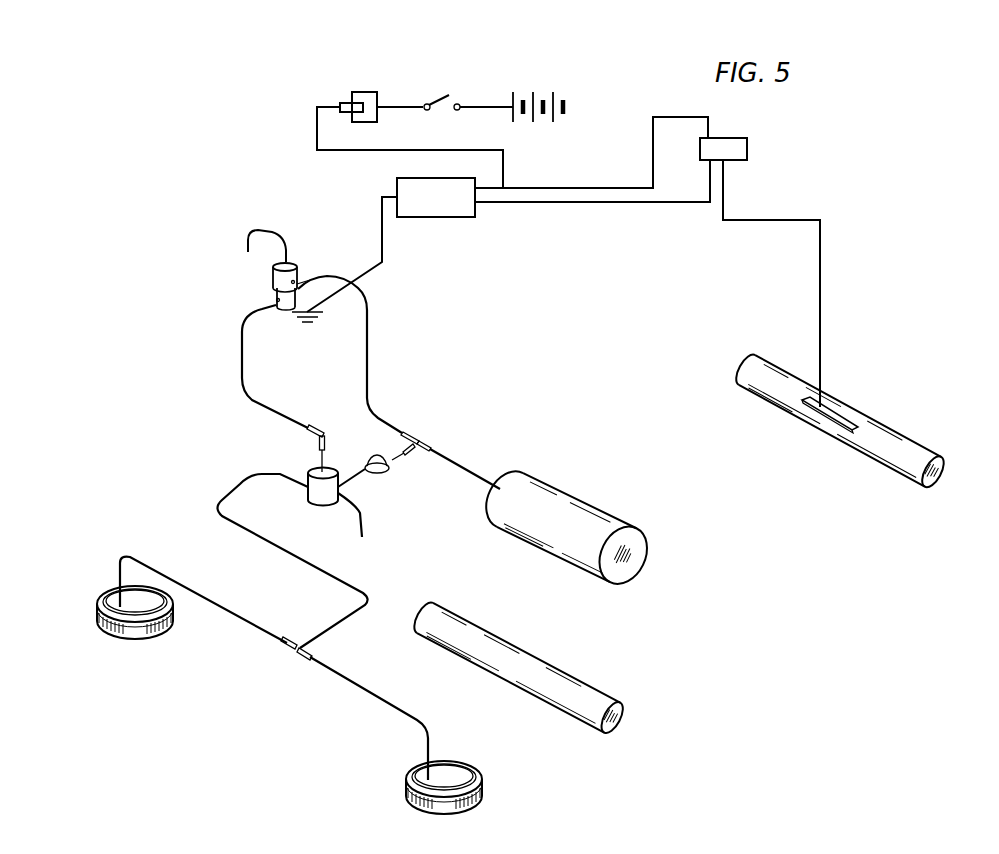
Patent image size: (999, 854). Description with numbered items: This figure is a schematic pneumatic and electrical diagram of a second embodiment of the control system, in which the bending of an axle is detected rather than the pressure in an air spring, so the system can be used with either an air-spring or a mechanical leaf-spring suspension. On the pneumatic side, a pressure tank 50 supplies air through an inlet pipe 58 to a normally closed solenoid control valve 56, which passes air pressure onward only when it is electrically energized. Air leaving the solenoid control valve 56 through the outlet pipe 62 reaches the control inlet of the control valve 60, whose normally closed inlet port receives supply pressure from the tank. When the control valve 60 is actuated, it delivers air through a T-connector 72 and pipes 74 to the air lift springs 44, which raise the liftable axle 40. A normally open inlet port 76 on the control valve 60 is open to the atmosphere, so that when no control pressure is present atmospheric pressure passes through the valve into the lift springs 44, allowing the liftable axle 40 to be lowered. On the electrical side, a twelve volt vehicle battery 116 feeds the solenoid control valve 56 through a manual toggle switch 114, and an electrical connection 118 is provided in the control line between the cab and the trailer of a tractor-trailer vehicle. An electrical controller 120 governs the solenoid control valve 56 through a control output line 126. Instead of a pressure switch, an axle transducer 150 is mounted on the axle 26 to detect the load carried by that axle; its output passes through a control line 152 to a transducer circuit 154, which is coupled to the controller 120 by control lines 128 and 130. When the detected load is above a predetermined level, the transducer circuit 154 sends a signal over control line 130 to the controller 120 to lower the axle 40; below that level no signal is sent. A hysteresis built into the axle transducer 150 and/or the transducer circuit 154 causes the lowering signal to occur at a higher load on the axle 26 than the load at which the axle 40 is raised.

The axle 26 is at (937, 477).
The liftable axle 40 is at (618, 722).
The air lift springs 44 is at (98, 628).
The pressure tank 50 is at (623, 562).
The solenoid control valve 56 is at (236, 231).
The inlet pipe 58 is at (367, 340).
The control valve 60 is at (317, 498).
The outlet pipe 62 is at (262, 309).
The T-connector 72 is at (290, 651).
The pipes 74 is at (192, 593).
The normally open inlet port 76 is at (362, 523).
The manual toggle switch 114 is at (443, 98).
The vehicle battery 116 is at (545, 93).
The electrical connection 118 is at (340, 102).
The electrical controller 120 is at (433, 178).
The control output line 126 is at (382, 207).
The control line 128 is at (573, 188).
The control line 130 is at (586, 203).
The axle transducer 150 is at (842, 422).
The control line 152 is at (778, 220).
The transducer circuit 154 is at (740, 138).